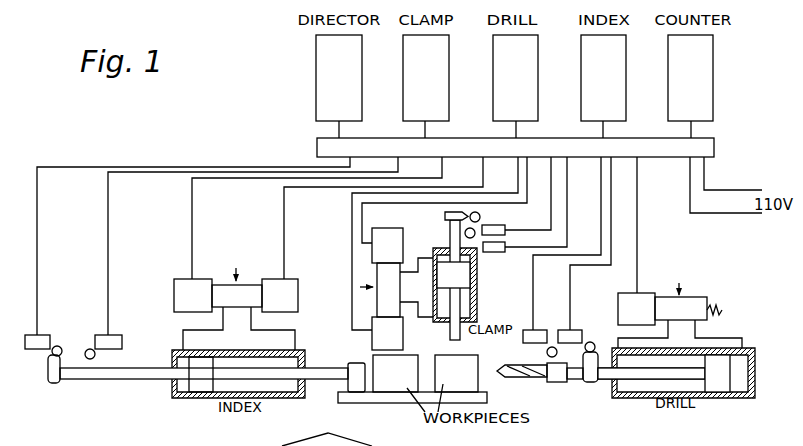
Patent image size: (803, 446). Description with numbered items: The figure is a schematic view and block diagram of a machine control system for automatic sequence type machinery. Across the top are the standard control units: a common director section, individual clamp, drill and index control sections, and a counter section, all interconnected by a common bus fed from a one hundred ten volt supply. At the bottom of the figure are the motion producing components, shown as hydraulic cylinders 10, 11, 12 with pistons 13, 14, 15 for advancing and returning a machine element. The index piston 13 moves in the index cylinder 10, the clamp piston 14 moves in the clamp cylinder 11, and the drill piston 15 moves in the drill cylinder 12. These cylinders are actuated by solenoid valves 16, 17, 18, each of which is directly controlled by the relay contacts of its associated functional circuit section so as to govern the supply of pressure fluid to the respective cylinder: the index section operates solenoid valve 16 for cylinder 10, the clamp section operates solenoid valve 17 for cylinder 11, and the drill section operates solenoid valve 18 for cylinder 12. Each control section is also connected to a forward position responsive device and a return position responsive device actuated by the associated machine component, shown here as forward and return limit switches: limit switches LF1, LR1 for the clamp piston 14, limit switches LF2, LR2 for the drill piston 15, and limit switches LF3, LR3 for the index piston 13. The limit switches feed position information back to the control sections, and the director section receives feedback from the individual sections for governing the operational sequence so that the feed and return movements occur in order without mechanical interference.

The hydraulic cylinder 10 is at (184, 401).
The hydraulic cylinder 11 is at (481, 286).
The hydraulic cylinder 12 is at (758, 387).
The index piston 13 is at (206, 394).
The clamp piston 14 is at (464, 276).
The drill piston 15 is at (720, 392).
The solenoid valve 16 is at (254, 285).
The solenoid valve 17 is at (401, 269).
The solenoid valve 18 is at (698, 298).
The return limit switch LR1 is at (494, 230).
The forward limit switch LF1 is at (501, 245).
The return limit switch LR2 is at (575, 332).
The forward limit switch LF2 is at (531, 345).
The return limit switch LR3 is at (48, 335).
The forward limit switch LF3 is at (117, 335).